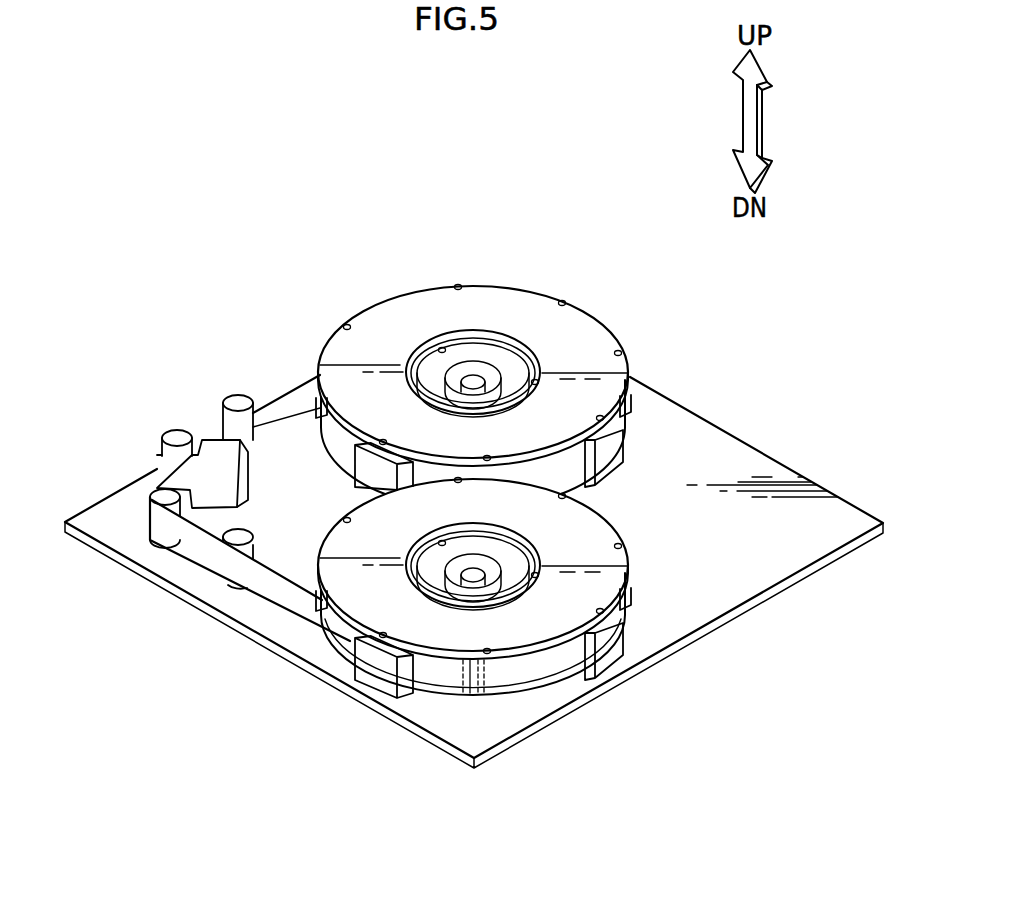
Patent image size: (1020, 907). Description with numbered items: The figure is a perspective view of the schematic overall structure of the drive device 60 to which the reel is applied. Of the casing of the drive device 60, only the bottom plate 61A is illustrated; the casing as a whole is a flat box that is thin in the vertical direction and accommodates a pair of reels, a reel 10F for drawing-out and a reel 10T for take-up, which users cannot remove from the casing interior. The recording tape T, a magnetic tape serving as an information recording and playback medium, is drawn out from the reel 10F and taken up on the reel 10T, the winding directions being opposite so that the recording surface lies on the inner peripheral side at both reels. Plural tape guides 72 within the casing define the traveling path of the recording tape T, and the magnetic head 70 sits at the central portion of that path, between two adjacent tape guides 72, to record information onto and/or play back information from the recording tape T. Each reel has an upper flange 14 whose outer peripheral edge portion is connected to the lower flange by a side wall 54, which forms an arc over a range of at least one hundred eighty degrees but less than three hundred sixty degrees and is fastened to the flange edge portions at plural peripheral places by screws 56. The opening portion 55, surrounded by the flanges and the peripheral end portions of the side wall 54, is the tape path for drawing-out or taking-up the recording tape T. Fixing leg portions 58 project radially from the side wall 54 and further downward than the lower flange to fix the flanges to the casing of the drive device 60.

The upper flange 14 is at (513, 300).
The side wall 54 is at (537, 475).
The opening portion 55 is at (340, 440).
The screws 56 is at (456, 287).
The fixing leg portions 58 is at (327, 333).
The drive device 60 is at (790, 297).
The bottom plate 61A is at (753, 446).
The magnetic head 70 is at (212, 455).
The tape guides 72 is at (237, 402).
The reel for take-up 10T is at (604, 319).
The reel for drawing-out 10F is at (638, 544).
The recording tape T is at (290, 607).